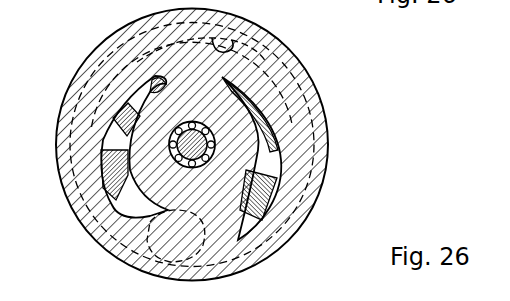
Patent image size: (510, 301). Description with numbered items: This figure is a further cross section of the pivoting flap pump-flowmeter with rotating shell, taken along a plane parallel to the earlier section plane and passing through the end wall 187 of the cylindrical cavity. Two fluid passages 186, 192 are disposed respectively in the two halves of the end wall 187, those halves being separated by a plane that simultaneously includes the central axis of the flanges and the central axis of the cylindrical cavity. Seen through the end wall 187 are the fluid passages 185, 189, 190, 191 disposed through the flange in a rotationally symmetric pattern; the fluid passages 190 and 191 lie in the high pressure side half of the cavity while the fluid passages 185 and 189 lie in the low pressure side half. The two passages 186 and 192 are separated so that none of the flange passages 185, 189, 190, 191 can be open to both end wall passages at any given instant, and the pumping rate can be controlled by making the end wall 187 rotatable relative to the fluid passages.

The fluid passage 185 is at (237, 50).
The fluid passage 186 is at (268, 240).
The end wall 187 is at (215, 234).
The fluid passage 189 is at (266, 175).
The fluid passage 190 is at (180, 243).
The fluid passage 191 is at (113, 127).
The first fluid passage 192 is at (104, 191).